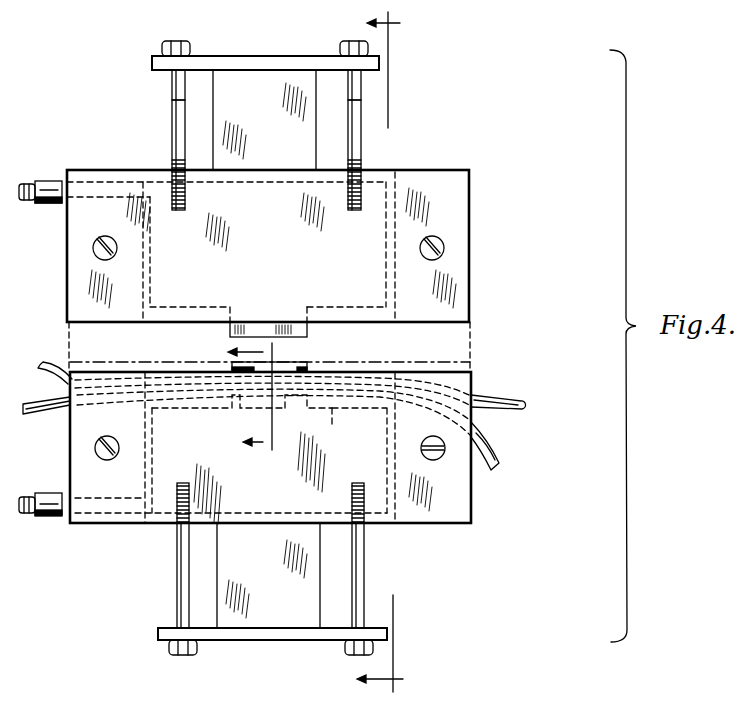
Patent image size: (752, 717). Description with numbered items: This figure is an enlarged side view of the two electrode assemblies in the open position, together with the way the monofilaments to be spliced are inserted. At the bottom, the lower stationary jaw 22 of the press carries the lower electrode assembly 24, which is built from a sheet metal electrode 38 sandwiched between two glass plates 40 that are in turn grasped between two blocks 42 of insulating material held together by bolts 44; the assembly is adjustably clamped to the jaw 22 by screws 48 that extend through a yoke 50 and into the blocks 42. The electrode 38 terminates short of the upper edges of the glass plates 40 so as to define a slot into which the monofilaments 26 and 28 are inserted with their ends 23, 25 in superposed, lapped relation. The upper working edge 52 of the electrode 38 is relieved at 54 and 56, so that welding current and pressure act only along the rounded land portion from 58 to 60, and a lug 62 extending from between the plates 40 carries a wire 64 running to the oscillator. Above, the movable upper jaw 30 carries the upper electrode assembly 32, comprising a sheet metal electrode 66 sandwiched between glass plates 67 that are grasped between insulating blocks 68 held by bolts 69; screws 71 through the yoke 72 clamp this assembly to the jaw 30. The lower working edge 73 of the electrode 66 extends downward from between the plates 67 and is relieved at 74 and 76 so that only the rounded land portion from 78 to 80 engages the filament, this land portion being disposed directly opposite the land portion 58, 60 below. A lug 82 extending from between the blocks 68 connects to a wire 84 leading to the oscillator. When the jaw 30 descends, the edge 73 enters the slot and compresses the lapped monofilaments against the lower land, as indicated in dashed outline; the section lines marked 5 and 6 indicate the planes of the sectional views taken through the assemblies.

The yoke 72 is at (257, 57).
The movable upper jaw 30 is at (264, 120).
The screws 71 is at (173, 115).
The upper electrode assembly 32 is at (445, 165).
The blocks of insulating material 68 is at (100, 210).
The relieved portion 76 is at (182, 307).
The relieved portion 74 is at (352, 307).
The bolts 69 is at (97, 252).
The lug 82 is at (45, 205).
The wire 84 is at (23, 182).
The rounded end of land portion 78 is at (230, 330).
The rounded end of land portion 80 is at (308, 332).
The sheet metal electrode 66 is at (337, 317).
The glass plates 67 is at (398, 300).
The lower working edge 73 is at (297, 340).
The section line 5- 5 is at (270, 395).
The section line 6- 6 is at (369, 352).
The lower electrode assembly 24 is at (417, 533).
The blocks of insulating material 42 is at (231, 447).
The relieved portion 54 is at (192, 460).
The rounded end of land portion 58 is at (237, 410).
The rounded end of land portion 60 is at (308, 414).
The relieved portion 56 is at (333, 413).
The upper working edge 52 is at (285, 402).
The glass plates 40 is at (145, 487).
The sheet metal electrode 38 is at (170, 453).
The bolts 44 is at (107, 435).
The lug 62 is at (55, 517).
The wire 64 is at (28, 517).
The monofilament end 25 is at (55, 368).
The monofilament 26 is at (36, 416).
The monofilament 28 is at (505, 398).
The monofilament end 23 is at (497, 450).
The lower stationary jaw 22 is at (268, 575).
The screws 48 is at (177, 578).
The yoke 50 is at (245, 640).